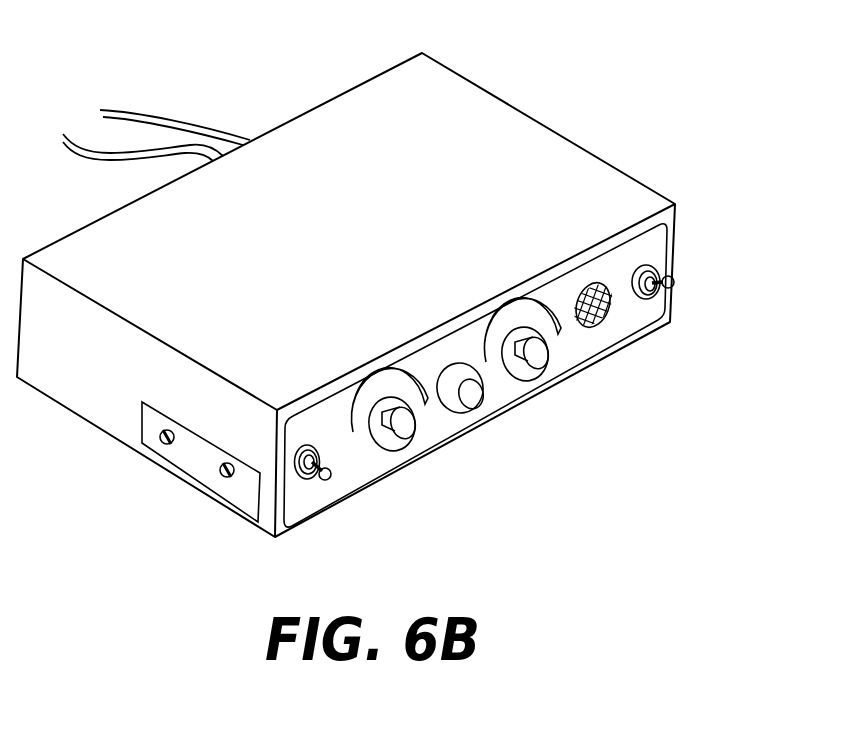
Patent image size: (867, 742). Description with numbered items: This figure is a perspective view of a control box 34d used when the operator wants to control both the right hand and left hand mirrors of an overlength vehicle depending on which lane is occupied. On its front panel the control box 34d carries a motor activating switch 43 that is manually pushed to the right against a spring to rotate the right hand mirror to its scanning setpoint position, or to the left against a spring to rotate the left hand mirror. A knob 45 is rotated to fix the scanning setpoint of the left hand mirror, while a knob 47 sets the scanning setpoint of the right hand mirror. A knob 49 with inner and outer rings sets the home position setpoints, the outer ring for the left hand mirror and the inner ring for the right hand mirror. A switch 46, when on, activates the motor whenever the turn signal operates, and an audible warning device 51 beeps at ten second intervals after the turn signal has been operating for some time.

The control box 34d is at (596, 147).
The motor activating switch 43 is at (327, 480).
The knob 45 is at (410, 431).
The knob 47 is at (543, 360).
The knob 49 is at (477, 402).
The audible warning device 51 is at (600, 312).
The switch 46 is at (674, 282).